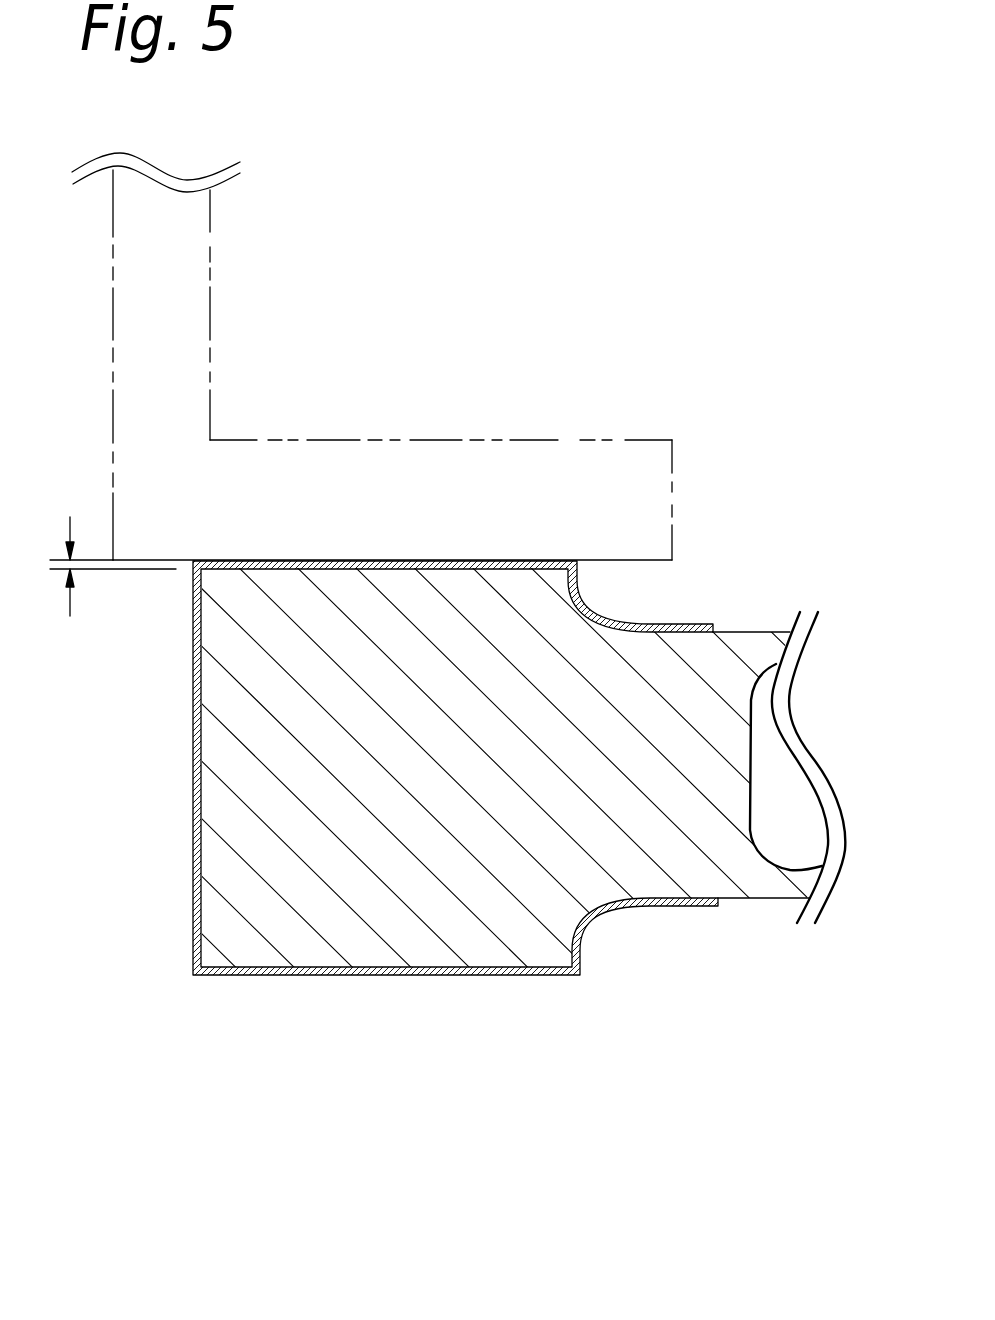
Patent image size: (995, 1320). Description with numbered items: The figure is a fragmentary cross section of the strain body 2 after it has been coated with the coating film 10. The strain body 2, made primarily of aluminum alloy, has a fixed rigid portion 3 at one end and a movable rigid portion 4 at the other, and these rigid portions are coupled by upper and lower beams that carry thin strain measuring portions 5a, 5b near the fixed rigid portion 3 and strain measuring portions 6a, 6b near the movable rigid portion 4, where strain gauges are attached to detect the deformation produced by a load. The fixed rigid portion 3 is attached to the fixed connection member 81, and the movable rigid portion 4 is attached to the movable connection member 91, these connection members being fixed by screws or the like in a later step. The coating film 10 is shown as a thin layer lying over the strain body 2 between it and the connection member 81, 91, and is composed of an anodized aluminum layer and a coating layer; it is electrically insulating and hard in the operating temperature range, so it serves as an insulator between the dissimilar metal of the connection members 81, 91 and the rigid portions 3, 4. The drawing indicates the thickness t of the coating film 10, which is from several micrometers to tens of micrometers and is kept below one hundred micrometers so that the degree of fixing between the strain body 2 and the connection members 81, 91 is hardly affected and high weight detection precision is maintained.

The fixed connection member 81 is at (411, 356).
The movable connection member 91 is at (562, 440).
The coating film 10 is at (365, 561).
The fixed rigid portion 3 is at (497, 880).
The movable rigid portion 4 is at (350, 938).
The strain measuring portion 5a is at (785, 708).
The strain measuring portion 5b is at (760, 640).
The strain measuring portion 6a is at (748, 862).
The strain measuring portion 6b is at (763, 888).
The strain body 2 is at (543, 976).
The thickness t is at (98, 566).